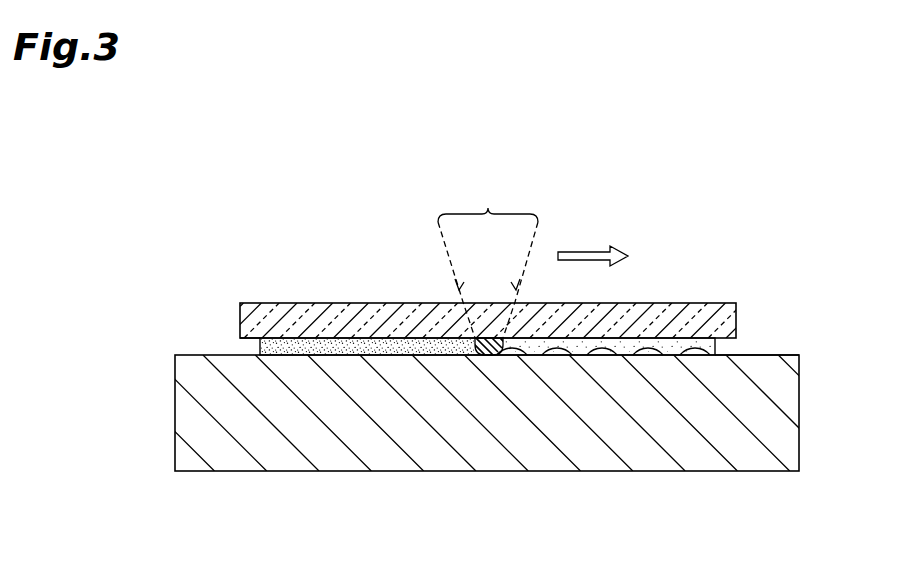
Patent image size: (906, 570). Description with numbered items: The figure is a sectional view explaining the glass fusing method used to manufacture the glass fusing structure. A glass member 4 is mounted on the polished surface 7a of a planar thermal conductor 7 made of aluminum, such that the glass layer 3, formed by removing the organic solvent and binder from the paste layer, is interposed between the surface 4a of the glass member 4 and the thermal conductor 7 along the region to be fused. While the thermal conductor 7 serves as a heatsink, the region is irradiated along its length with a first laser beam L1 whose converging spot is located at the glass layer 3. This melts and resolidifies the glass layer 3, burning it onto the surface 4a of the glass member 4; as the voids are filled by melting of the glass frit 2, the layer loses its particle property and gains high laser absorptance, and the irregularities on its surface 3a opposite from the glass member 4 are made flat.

The glass frit 2 is at (703, 345).
The glass layer 3 is at (398, 347).
The surface of the glass layer 3a is at (405, 352).
The glass member 4 is at (258, 318).
The surface of the glass member 4a is at (243, 343).
The thermal conductor 7 is at (755, 460).
The surface of the thermal conductor 7a is at (760, 355).
The first laser beam L1 is at (488, 259).